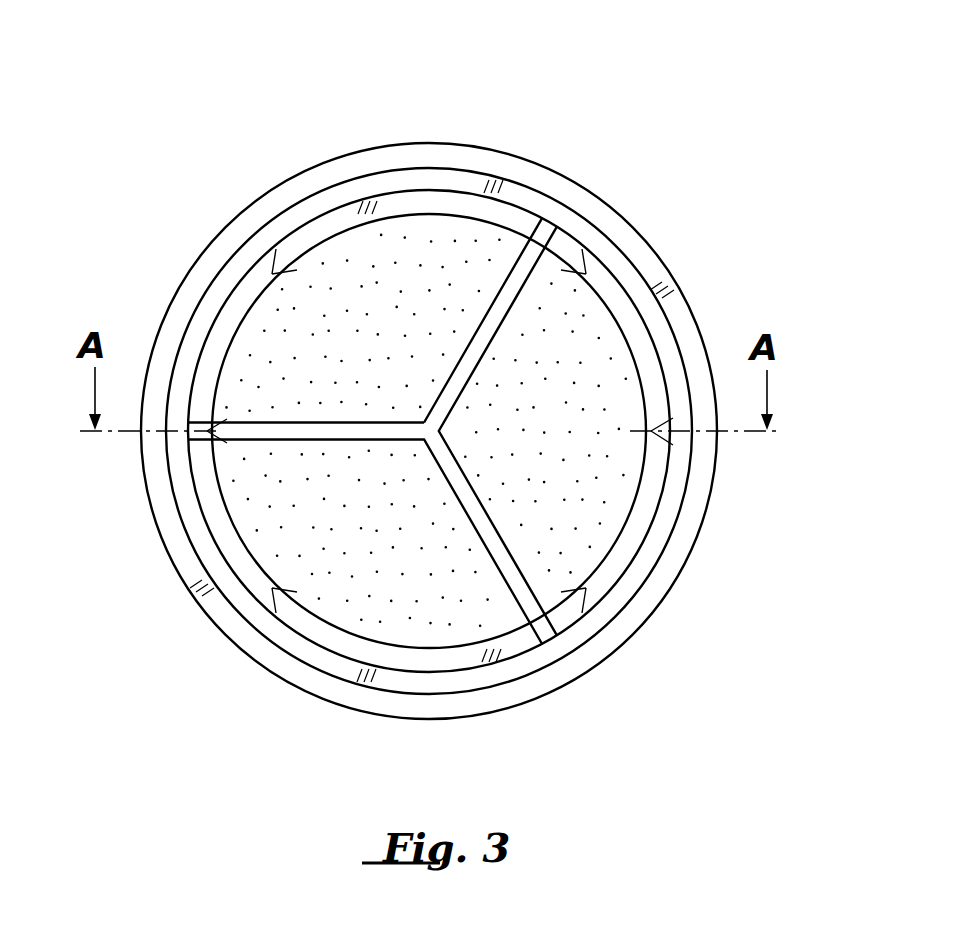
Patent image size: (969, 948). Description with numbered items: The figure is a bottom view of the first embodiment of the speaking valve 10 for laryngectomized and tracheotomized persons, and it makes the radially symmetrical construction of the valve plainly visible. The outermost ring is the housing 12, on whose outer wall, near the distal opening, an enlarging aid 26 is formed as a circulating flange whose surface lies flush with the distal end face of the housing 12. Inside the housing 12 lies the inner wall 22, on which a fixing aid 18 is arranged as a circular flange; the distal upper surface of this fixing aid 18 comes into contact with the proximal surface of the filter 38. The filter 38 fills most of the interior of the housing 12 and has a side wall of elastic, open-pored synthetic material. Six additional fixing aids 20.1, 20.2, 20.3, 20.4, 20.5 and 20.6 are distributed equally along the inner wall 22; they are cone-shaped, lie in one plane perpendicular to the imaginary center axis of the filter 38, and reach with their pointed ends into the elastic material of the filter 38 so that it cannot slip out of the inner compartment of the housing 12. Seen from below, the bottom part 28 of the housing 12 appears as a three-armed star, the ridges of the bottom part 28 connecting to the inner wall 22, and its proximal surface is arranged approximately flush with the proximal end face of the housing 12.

The speaking valve 10 is at (614, 91).
The housing 12 is at (197, 538).
The fixing aid 18 is at (243, 573).
The inner wall 22 is at (663, 385).
The enlarging aid 26 is at (362, 168).
The bottom part 28 is at (532, 608).
The filter 38 is at (388, 503).
The additional fixing aid 20.1 is at (262, 600).
The additional fixing aid 20.2 is at (598, 602).
The additional fixing aid 20.3 is at (660, 438).
The additional fixing aid 20.4 is at (596, 264).
The additional fixing aid 20.5 is at (262, 265).
The additional fixing aid 20.6 is at (200, 440).